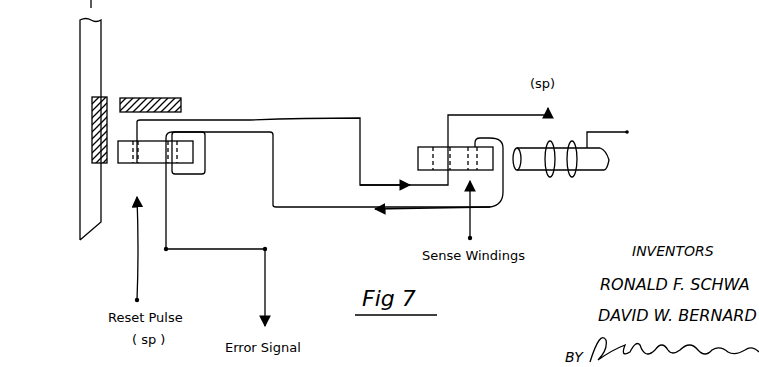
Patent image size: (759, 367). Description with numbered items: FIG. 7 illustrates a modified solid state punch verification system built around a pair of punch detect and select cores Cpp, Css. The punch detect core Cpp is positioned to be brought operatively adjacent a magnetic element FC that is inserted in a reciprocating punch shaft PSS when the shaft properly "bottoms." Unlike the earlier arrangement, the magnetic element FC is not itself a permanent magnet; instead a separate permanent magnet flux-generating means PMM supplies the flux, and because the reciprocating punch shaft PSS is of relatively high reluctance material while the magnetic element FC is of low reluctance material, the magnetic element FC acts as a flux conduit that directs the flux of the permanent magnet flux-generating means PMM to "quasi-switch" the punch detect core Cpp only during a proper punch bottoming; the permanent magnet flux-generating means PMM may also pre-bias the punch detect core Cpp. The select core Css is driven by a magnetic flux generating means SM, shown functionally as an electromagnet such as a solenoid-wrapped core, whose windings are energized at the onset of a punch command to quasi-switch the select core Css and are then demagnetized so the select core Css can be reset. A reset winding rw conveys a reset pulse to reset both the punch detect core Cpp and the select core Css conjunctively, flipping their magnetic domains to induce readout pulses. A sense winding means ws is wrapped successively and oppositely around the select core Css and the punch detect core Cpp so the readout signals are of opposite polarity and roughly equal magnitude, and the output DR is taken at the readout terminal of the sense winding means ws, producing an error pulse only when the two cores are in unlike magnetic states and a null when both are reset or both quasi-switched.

The reciprocating punch shaft PSS is at (78, 74).
The magnetic element FC is at (88, 143).
The permanent magnet flux-generating means PMM is at (156, 96).
The punch detect core Cpp is at (194, 151).
The select core Css is at (417, 153).
The reset winding rw is at (297, 108).
The sense winding means ws is at (338, 205).
The magnetic flux generating means SM is at (607, 166).
The output DR is at (266, 275).